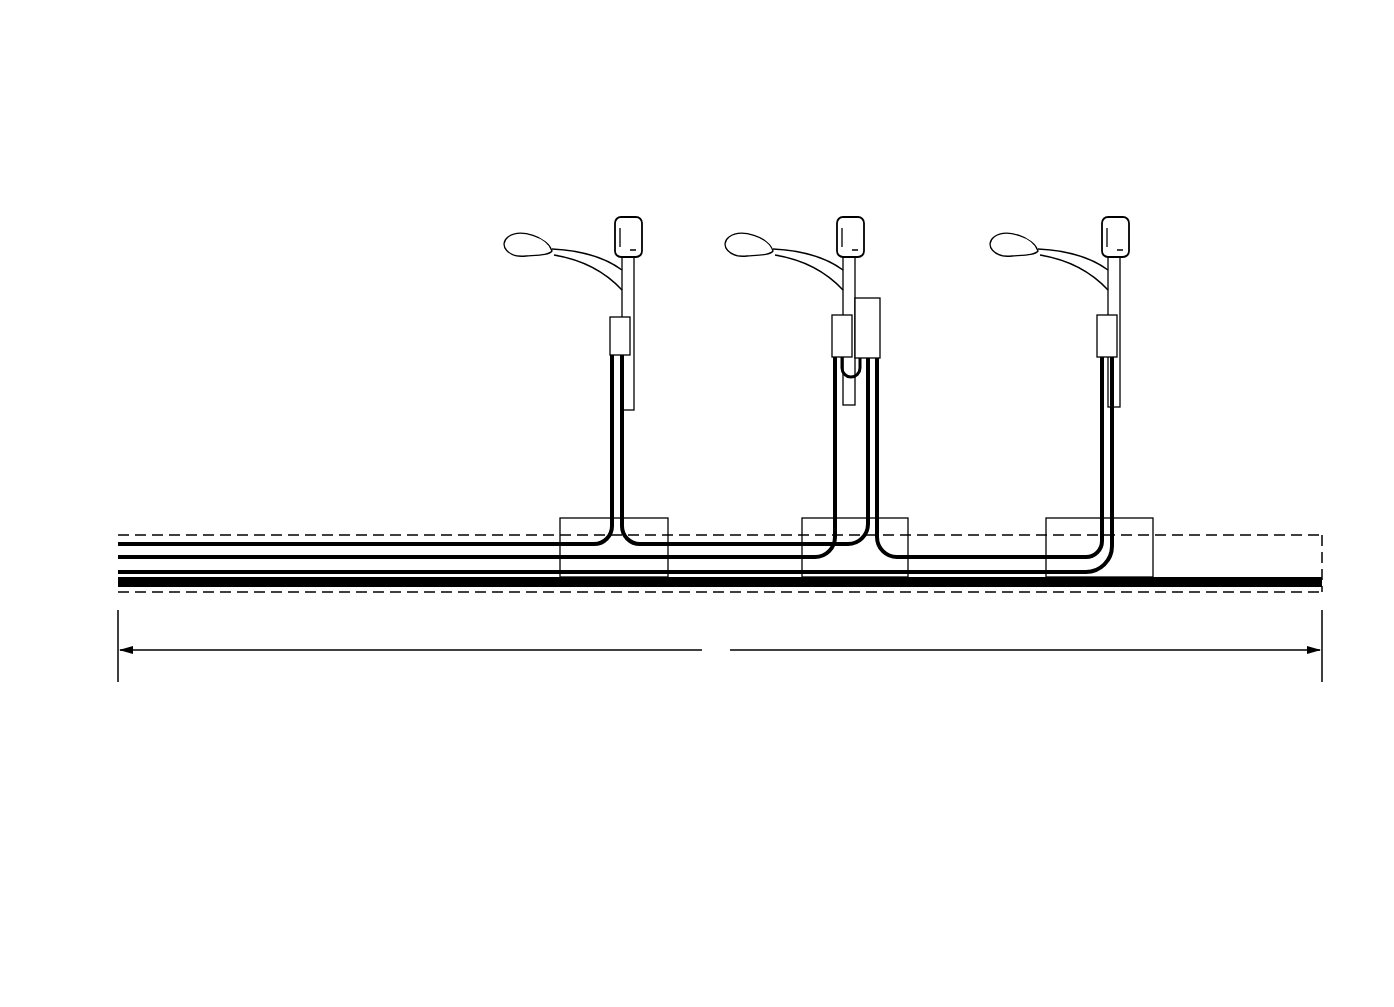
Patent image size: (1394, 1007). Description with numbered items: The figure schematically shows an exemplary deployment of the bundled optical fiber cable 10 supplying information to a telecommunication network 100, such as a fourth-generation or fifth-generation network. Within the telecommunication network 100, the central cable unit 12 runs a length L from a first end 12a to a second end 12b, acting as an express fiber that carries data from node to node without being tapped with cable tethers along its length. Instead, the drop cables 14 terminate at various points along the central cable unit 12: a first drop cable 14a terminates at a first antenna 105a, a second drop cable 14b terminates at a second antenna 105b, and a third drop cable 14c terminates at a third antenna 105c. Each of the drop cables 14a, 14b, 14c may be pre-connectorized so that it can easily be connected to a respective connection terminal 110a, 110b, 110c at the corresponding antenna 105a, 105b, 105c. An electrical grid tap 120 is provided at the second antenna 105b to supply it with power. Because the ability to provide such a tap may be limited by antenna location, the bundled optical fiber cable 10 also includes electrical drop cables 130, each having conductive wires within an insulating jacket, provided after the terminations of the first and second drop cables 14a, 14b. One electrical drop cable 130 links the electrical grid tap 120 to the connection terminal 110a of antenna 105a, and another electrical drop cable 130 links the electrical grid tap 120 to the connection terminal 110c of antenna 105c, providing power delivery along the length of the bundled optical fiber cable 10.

The telecommunication network 100 is at (486, 183).
The bundled optical fiber cable 10 is at (239, 507).
The central cable unit 12 is at (170, 590).
The first end 12a is at (112, 577).
The second end 12b is at (1334, 568).
The drop cables 14 is at (177, 566).
The first drop cable 14a is at (611, 445).
The second drop cable 14b is at (834, 435).
The third drop cable 14c is at (1113, 458).
The first antenna 105a is at (589, 211).
The second antenna 105b is at (811, 195).
The third antenna 105c is at (1089, 185).
The connection terminal 110a is at (622, 335).
The connection terminal 110b is at (838, 345).
The connection terminal 110c is at (1104, 345).
The electrical grid tap 120 is at (873, 325).
The electrical drop cable 130 is at (711, 540).